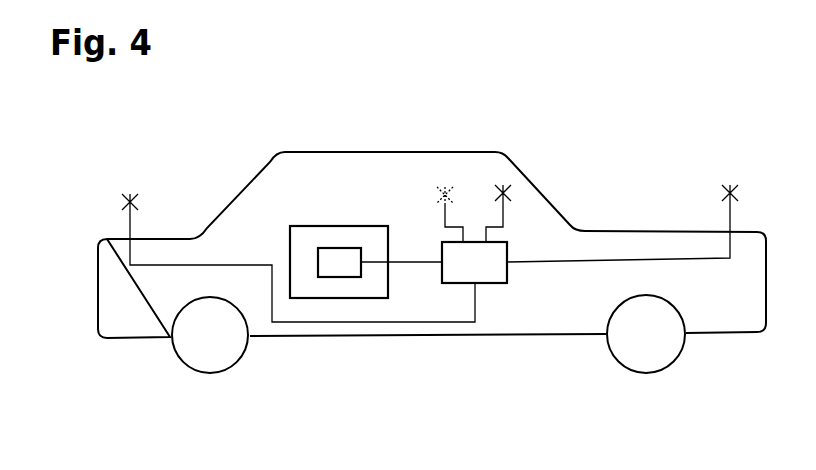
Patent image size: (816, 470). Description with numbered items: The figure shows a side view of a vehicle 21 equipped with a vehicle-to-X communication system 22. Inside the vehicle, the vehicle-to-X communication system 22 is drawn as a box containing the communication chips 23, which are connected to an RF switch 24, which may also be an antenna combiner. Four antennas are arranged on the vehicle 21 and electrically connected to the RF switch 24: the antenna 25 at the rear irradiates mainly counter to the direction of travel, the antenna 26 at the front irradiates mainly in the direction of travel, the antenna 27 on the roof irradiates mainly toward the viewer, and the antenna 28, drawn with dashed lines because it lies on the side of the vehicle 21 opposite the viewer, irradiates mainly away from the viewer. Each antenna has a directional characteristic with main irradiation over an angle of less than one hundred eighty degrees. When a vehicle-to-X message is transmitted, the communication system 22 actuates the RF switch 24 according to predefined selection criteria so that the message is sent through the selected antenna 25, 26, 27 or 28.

The vehicle 21 is at (362, 151).
The vehicle-to-X communication system 22 is at (312, 298).
The communication chips 23 is at (350, 277).
The RF switch 24 is at (500, 283).
The antenna 25 is at (130, 194).
The antenna 26 is at (730, 185).
The antenna 27 is at (503, 185).
The antenna 28 is at (445, 187).